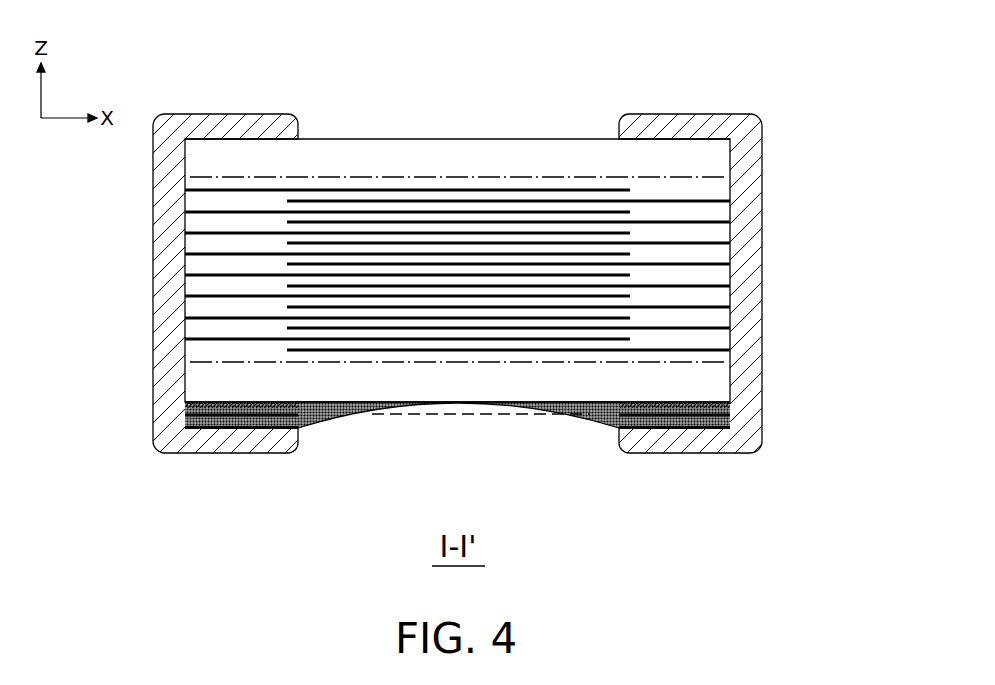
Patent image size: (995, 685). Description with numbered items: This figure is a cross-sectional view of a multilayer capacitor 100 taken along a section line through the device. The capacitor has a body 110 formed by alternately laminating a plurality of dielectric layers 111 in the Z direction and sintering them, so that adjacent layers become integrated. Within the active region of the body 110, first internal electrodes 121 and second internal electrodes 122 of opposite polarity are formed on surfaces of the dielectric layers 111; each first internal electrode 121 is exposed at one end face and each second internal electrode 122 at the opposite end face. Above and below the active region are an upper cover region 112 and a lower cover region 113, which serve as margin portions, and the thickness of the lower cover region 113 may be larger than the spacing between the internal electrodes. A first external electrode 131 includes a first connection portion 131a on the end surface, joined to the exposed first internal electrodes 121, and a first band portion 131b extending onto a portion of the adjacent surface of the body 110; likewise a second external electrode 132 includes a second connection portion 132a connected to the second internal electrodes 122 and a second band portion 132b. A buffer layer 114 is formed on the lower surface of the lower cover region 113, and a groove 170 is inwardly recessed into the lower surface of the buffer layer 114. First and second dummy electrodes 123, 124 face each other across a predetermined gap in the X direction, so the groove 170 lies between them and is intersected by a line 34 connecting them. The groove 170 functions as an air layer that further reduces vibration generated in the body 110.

The multilayer capacitor 100 is at (435, 37).
The body 110 is at (594, 138).
The dielectric layer 111 is at (492, 189).
The upper cover region 112 is at (419, 163).
The lower cover region 113 is at (458, 384).
The buffer layer 114 is at (224, 426).
The first internal electrode 121 is at (346, 188).
The second internal electrode 122 is at (559, 199).
The first dummy electrode 123 is at (261, 418).
The second dummy electrode 124 is at (661, 429).
The first external electrode 131 is at (73, 370).
The first connection portion 131a is at (160, 358).
The first band portion 131b is at (205, 452).
The second external electrode 132 is at (843, 370).
The second connection portion 132a is at (757, 358).
The second band portion 132b is at (718, 452).
The groove 170 is at (579, 421).
The line 34 is at (395, 419).